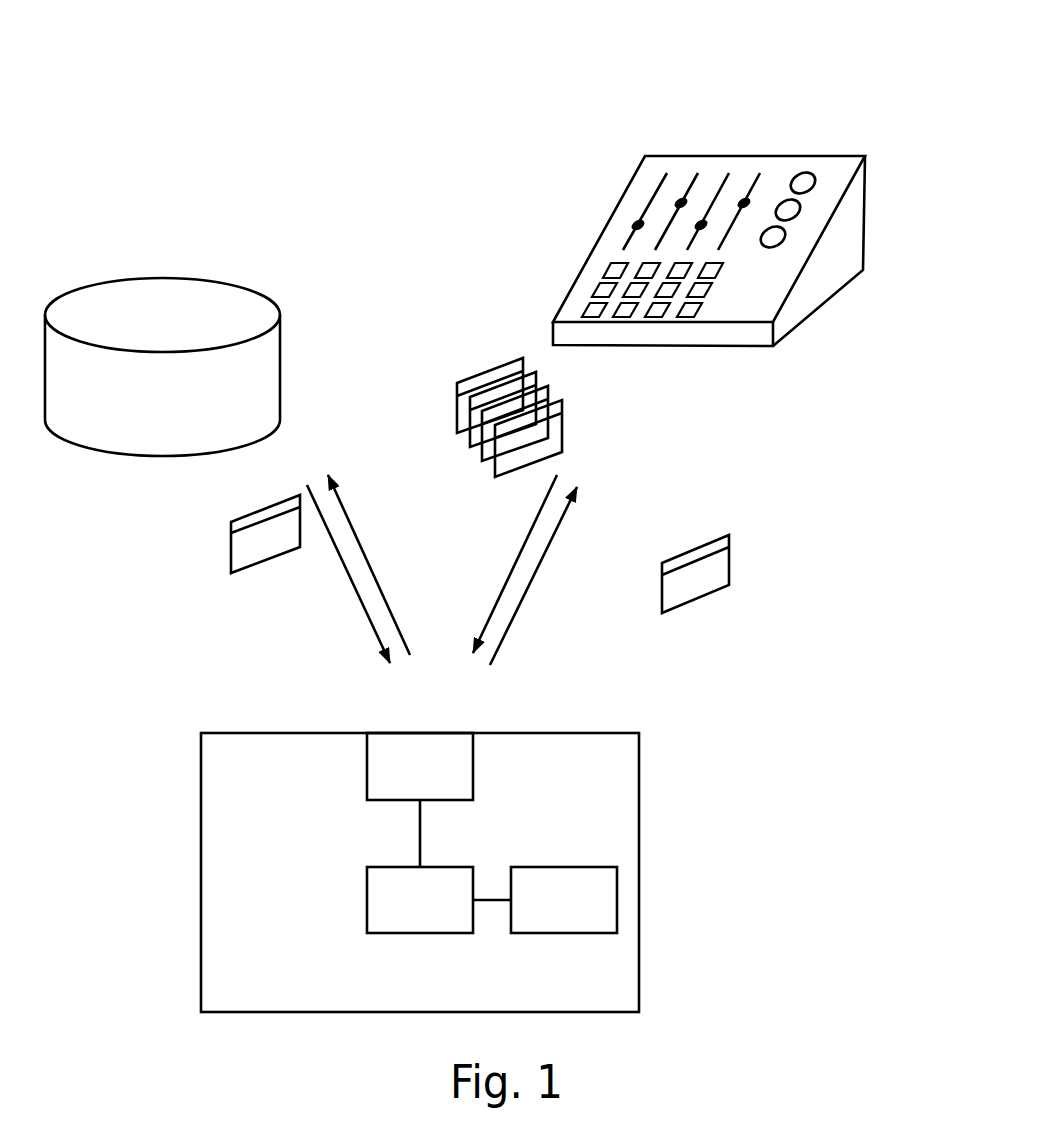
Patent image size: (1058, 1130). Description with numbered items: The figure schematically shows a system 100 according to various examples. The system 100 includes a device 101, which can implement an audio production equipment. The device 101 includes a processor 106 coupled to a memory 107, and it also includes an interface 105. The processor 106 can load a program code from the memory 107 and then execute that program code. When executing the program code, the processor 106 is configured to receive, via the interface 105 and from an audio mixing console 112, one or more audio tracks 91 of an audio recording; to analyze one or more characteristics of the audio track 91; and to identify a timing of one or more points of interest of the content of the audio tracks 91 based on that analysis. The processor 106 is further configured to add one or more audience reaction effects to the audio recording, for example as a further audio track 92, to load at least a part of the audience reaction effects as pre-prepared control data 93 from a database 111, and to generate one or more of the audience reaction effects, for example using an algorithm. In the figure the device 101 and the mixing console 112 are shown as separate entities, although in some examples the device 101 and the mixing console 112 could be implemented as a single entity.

The system 100 is at (818, 90).
The audio mixing console 112 is at (845, 235).
The database 111 is at (218, 307).
The audio tracks 91 is at (467, 437).
The further audio track 92 is at (718, 563).
The pre-prepared control data 93 is at (231, 545).
The device 101 is at (478, 872).
The interface 105 is at (375, 758).
The processor 106 is at (378, 900).
The memory 107 is at (577, 875).